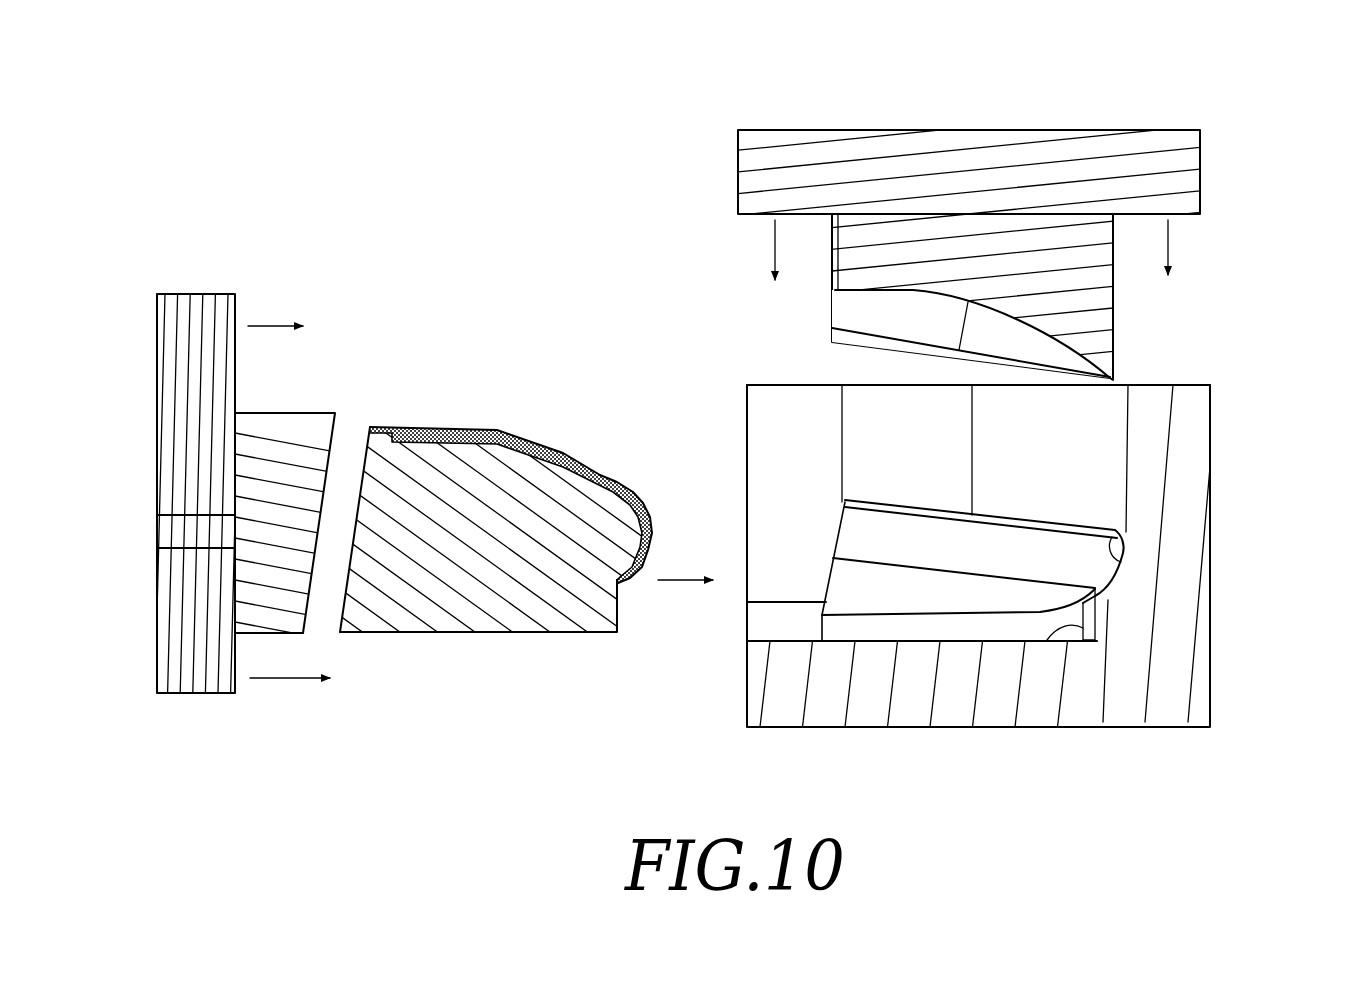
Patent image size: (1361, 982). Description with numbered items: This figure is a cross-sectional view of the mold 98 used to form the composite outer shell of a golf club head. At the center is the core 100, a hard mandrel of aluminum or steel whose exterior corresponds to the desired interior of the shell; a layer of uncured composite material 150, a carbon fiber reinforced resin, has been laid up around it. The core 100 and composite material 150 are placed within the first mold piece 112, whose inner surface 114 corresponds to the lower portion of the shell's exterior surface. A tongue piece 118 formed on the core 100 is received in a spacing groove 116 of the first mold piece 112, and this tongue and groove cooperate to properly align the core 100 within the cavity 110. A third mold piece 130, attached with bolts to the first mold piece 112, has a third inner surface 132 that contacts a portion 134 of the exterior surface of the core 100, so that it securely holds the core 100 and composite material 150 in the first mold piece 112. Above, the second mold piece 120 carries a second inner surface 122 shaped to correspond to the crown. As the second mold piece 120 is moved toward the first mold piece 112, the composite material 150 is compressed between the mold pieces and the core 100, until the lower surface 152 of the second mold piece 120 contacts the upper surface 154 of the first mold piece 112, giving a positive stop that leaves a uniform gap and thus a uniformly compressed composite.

The mold 98 is at (1109, 87).
The core 100 is at (500, 539).
The cavity 110 is at (990, 563).
The first mold piece 112 is at (1045, 566).
The inner surface 114 is at (1120, 530).
The spacing groove 116 is at (1095, 637).
The tongue piece 118 is at (540, 633).
The second mold piece 120 is at (1200, 155).
The second inner surface 122 is at (853, 317).
The third mold piece 130 is at (212, 695).
The third inner surface 132 is at (341, 437).
The portion of the exterior surface 134 is at (358, 453).
The uncured composite material 150 is at (597, 473).
The lower surface 152 is at (1033, 235).
The upper surface 154 is at (1162, 380).